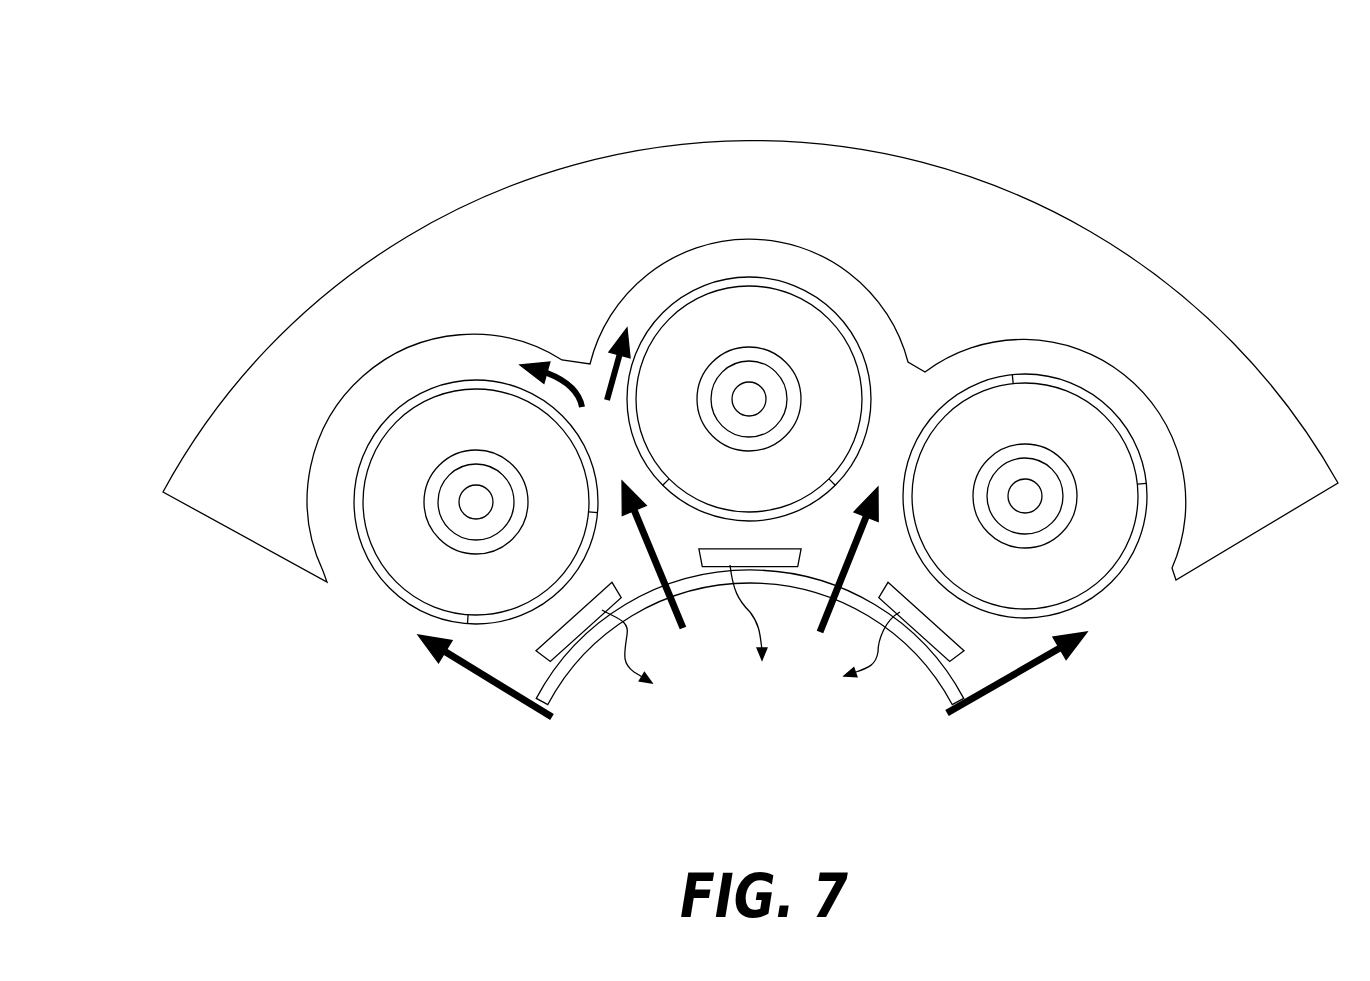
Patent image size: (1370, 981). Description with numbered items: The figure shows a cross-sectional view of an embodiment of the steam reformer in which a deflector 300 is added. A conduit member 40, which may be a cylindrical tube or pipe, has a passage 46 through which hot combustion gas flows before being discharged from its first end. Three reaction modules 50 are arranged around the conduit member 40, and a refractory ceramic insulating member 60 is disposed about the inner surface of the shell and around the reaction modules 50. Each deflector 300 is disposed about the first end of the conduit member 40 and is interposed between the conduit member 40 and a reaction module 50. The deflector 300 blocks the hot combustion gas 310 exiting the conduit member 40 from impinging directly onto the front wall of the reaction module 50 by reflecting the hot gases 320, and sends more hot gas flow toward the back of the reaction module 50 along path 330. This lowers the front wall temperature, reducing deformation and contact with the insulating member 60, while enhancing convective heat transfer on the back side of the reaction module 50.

The conduit member 40 is at (952, 682).
The passage 46 is at (772, 724).
The reaction module 50 is at (763, 283).
The insulating member 60 is at (1268, 484).
The deflector 300 is at (947, 630).
The hot combustion gas 310 is at (487, 680).
The reflected hot gases 320 is at (630, 668).
The path 330 is at (590, 362).